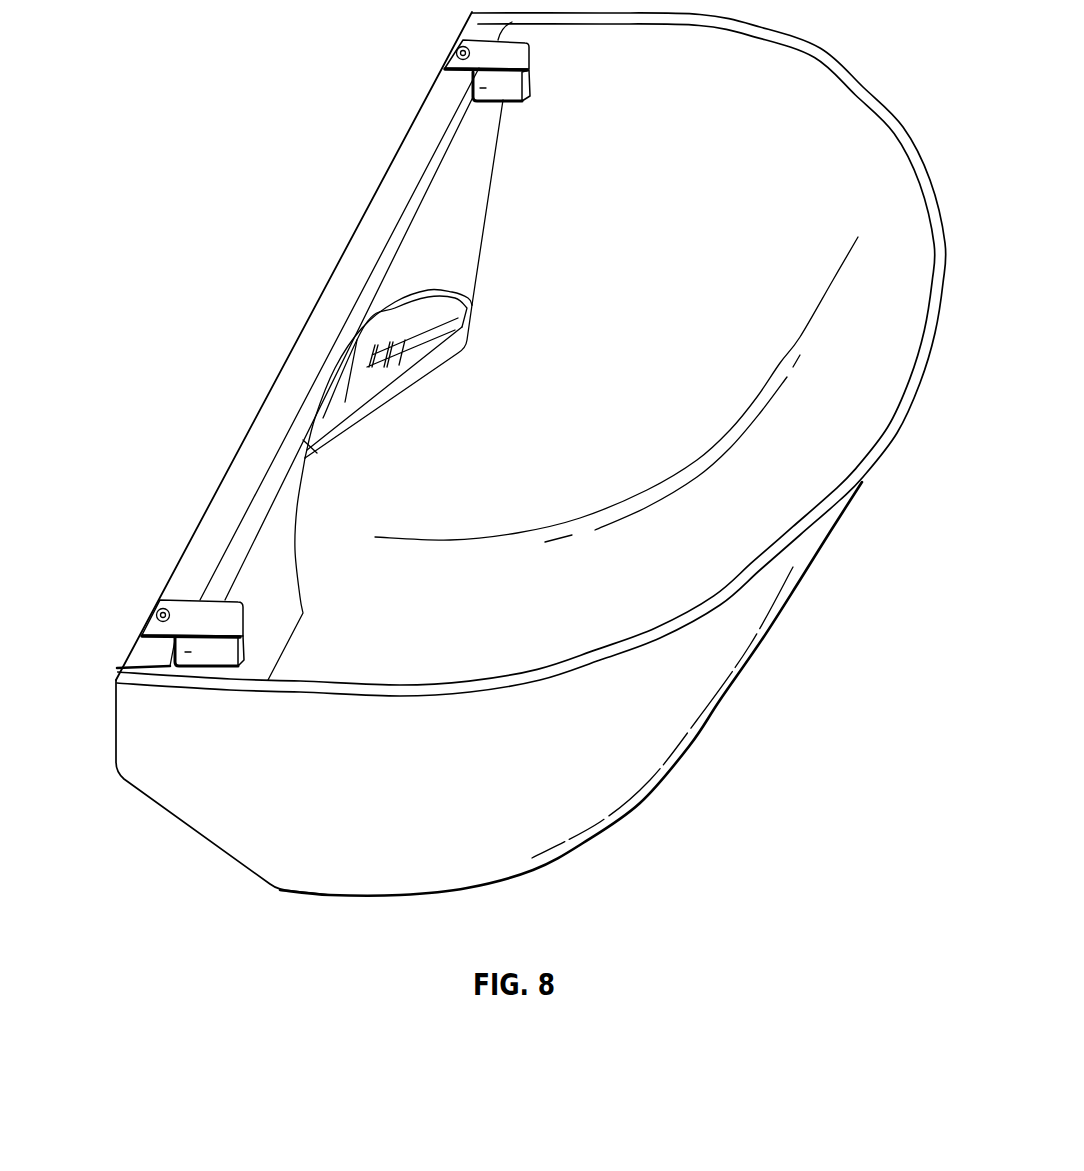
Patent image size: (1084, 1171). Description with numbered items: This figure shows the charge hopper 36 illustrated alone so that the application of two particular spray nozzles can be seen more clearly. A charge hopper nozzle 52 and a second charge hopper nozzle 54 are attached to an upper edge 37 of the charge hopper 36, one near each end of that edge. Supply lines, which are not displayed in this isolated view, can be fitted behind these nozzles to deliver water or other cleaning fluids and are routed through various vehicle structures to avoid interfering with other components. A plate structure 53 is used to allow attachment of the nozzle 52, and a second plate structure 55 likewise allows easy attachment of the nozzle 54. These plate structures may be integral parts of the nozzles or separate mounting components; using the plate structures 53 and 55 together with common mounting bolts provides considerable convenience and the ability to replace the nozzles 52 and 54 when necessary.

The charge hopper 36 is at (618, 790).
The upper edge 37 is at (350, 269).
The charge hopper nozzle 52 is at (172, 637).
The plate structure 53 is at (190, 605).
The charge hopper nozzle 54 is at (531, 72).
The second plate structure 55 is at (487, 52).